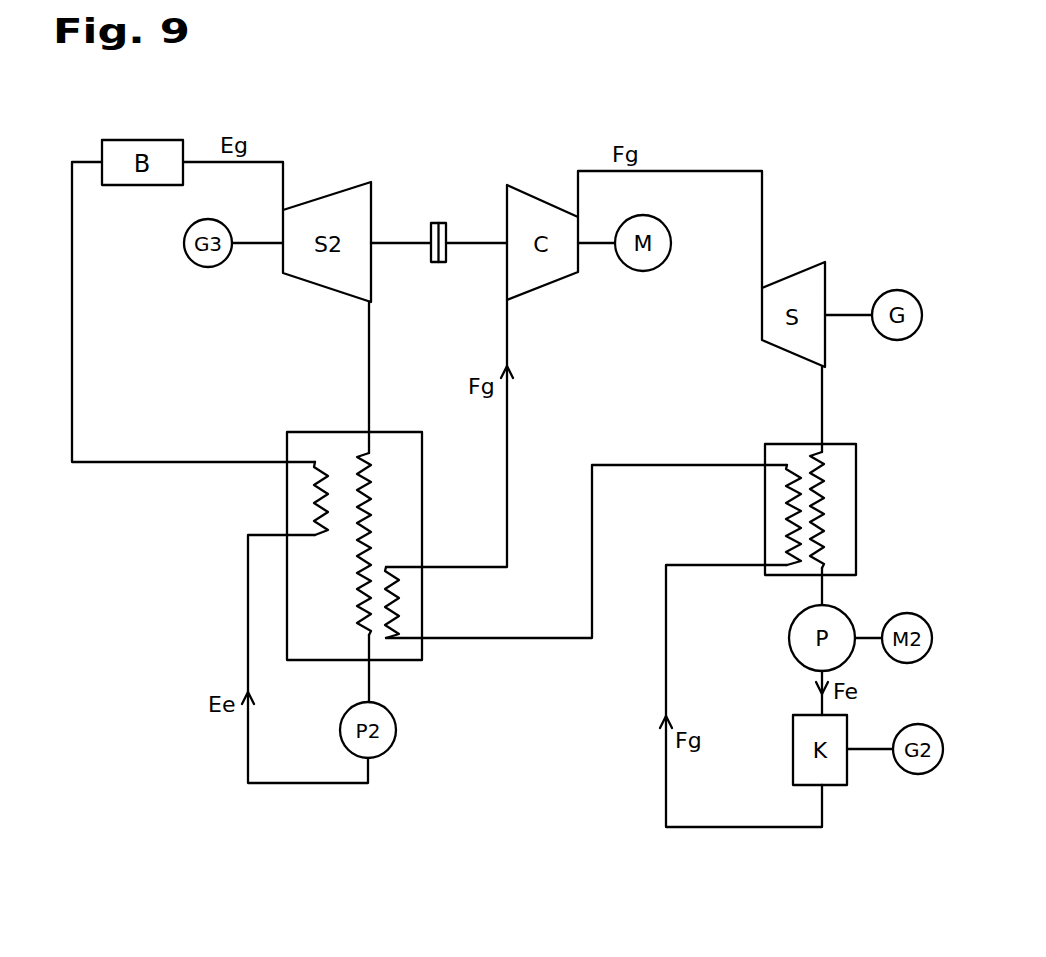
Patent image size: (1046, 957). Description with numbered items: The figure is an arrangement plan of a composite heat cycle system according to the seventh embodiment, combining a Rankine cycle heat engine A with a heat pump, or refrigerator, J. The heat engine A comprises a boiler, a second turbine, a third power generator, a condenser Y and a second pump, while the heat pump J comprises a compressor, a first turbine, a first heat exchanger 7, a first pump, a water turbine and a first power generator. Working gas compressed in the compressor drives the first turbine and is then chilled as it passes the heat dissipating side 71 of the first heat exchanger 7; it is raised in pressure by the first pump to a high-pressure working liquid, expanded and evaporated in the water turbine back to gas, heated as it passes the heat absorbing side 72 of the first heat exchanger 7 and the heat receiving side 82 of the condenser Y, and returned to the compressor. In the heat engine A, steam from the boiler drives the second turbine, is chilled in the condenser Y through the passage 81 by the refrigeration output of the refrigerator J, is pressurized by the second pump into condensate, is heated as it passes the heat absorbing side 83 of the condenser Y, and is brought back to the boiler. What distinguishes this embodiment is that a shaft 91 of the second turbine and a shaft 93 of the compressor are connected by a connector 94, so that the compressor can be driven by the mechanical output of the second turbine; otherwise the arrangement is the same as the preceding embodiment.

The first heat exchanger 7 is at (810, 509).
The heat dissipating side 71 is at (813, 488).
The heat absorbing side 72 is at (793, 515).
The condenser passage 81 is at (370, 508).
The heat receiving side 82 is at (396, 598).
The heat absorbing side 83 is at (315, 491).
The shaft 91 is at (402, 245).
The shaft 93 is at (473, 242).
The connector 94 is at (443, 263).
The condenser Y is at (423, 462).
The heat engine A is at (282, 140).
The heat cycle system J is at (690, 130).